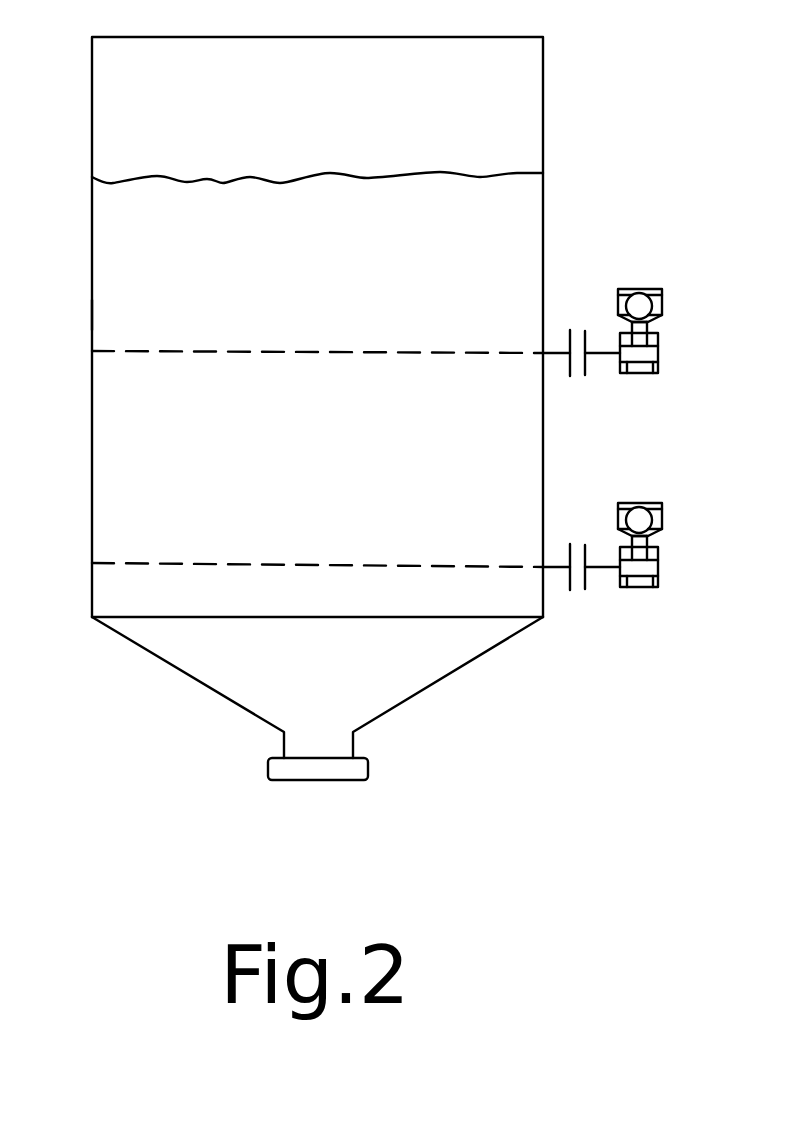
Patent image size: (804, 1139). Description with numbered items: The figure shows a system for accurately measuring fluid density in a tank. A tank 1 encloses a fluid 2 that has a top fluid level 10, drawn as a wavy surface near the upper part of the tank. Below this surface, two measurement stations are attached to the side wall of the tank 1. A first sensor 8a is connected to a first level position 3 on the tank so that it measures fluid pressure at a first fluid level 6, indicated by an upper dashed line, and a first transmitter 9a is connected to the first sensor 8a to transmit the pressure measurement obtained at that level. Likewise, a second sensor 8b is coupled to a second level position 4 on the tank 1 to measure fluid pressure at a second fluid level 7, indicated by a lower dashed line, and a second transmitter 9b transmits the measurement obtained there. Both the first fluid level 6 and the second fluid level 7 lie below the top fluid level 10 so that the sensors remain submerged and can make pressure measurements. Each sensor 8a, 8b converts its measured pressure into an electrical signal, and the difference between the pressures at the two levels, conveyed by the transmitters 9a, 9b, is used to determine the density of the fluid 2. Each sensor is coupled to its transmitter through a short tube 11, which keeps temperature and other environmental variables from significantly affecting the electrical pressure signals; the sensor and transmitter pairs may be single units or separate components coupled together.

The tank 1 is at (543, 38).
The fluid 2 is at (100, 222).
The first level position 3 is at (572, 330).
The second level position 4 is at (570, 547).
The first fluid level 6 is at (117, 351).
The second fluid level 7 is at (108, 563).
The first sensor 8a is at (658, 365).
The second sensor 8b is at (658, 581).
The first transmitter 9a is at (661, 303).
The second transmitter 9b is at (661, 519).
The top fluid level 10 is at (517, 173).
The short tube 11 is at (627, 331).